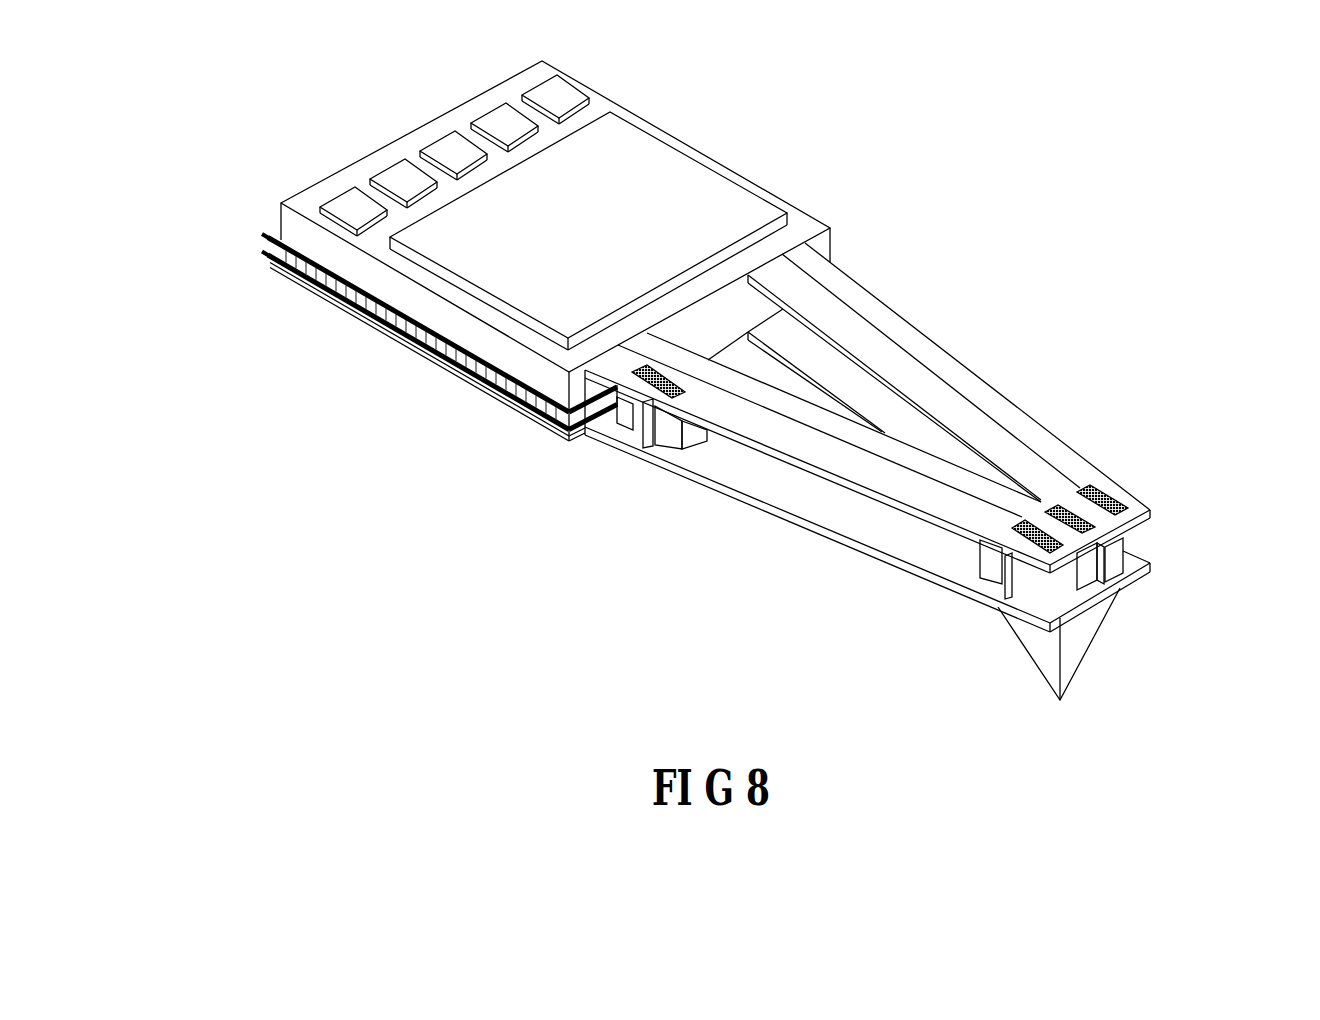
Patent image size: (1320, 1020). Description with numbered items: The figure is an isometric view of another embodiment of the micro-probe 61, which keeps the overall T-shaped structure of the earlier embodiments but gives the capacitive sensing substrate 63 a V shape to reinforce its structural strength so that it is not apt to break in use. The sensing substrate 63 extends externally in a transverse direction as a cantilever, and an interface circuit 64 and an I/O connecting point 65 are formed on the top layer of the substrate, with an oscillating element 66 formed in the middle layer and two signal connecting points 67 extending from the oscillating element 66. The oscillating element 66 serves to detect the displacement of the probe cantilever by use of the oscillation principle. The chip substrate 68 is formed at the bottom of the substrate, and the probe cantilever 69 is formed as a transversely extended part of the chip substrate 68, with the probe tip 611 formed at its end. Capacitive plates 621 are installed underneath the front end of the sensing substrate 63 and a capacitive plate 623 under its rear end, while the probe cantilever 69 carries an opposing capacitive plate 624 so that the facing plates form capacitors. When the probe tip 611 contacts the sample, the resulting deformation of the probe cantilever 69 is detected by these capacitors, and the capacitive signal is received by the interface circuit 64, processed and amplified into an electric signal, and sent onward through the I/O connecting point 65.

The micro-probe 61 is at (880, 220).
The capacitive sensing substrate 63 is at (947, 363).
The interface circuit 64 is at (662, 202).
The I/O connecting point 65 is at (562, 110).
The oscillating element 66 is at (400, 333).
The signal connecting point 67 is at (268, 237).
The chip substrate 68 is at (472, 380).
The probe cantilever 69 is at (843, 535).
The probe tip 611 is at (1082, 637).
The capacitive plate 621 is at (1117, 553).
The capacitive plate 623 is at (635, 417).
The capacitive plate 624 is at (647, 407).